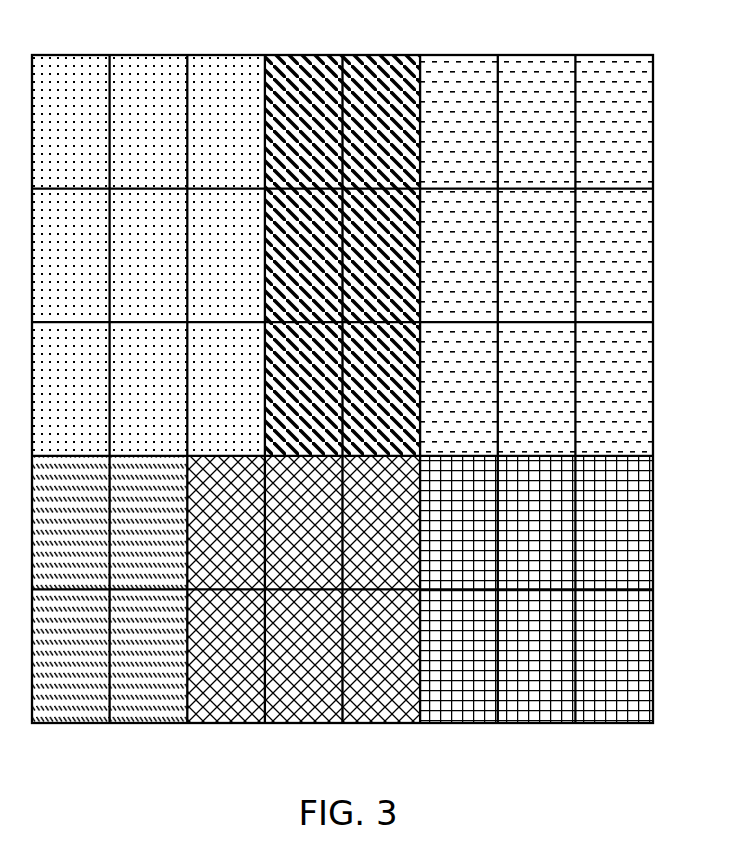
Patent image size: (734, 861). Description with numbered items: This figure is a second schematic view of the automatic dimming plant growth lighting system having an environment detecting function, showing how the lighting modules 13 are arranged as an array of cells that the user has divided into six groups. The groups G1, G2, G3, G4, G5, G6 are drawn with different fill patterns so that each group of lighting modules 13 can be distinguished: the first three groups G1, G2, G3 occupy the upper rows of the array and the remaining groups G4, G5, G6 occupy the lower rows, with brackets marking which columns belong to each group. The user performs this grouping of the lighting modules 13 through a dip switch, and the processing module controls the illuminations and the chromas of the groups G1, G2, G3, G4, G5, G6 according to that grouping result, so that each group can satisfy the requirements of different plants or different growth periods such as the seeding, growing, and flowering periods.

The lighting modules 13 is at (653, 128).
The group G1 is at (32, 50).
The group G2 is at (268, 50).
The group G3 is at (653, 50).
The group G4 is at (184, 728).
The group G5 is at (418, 728).
The group G6 is at (653, 728).